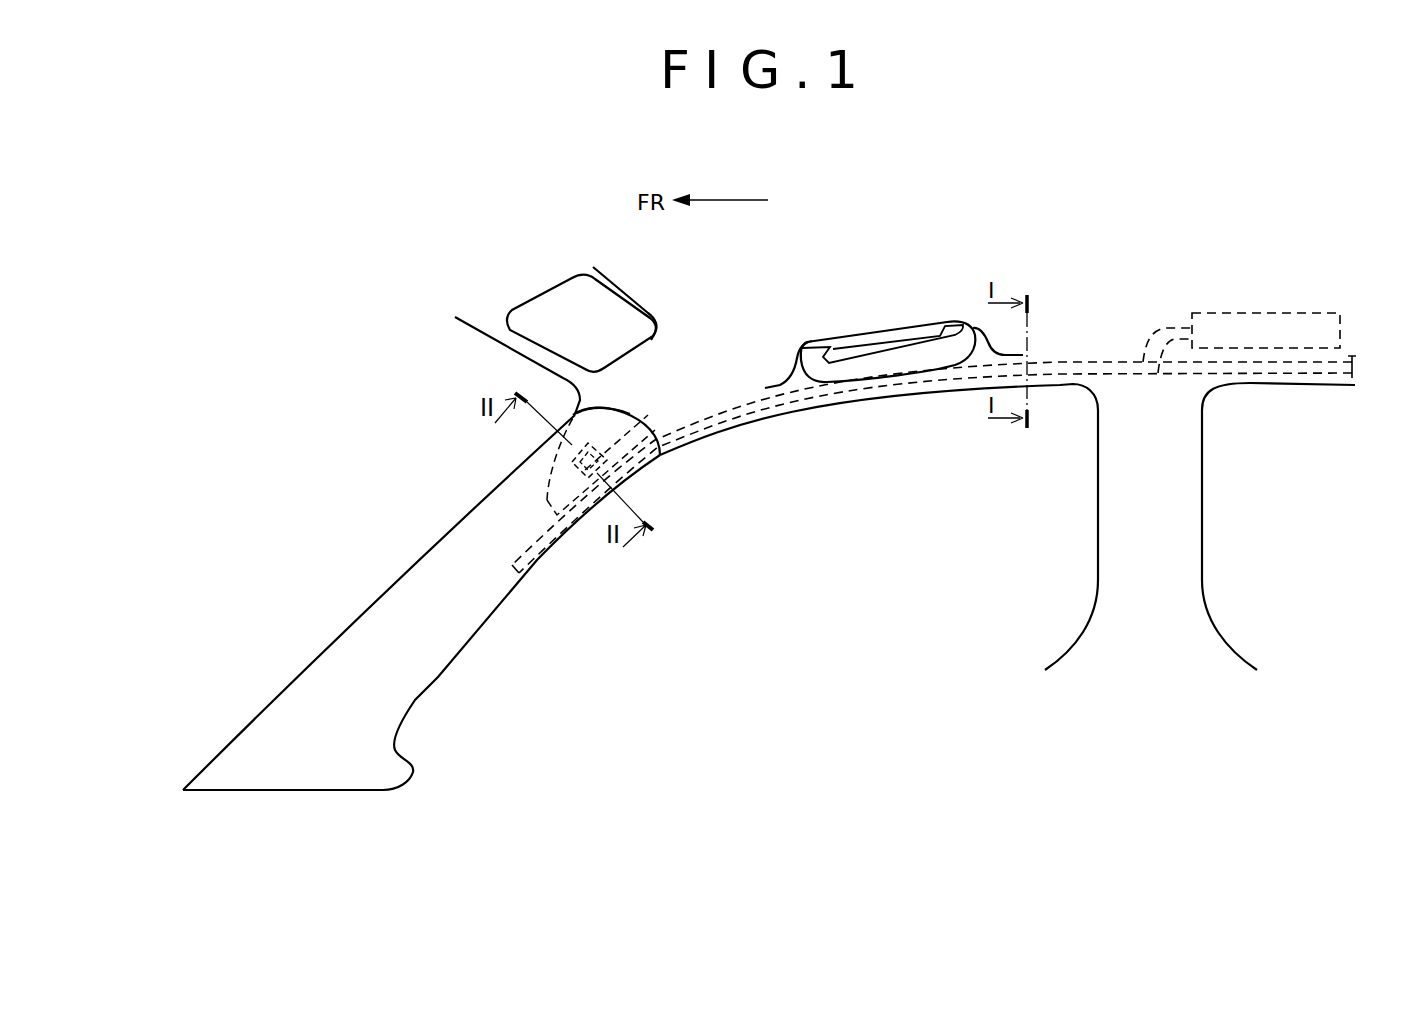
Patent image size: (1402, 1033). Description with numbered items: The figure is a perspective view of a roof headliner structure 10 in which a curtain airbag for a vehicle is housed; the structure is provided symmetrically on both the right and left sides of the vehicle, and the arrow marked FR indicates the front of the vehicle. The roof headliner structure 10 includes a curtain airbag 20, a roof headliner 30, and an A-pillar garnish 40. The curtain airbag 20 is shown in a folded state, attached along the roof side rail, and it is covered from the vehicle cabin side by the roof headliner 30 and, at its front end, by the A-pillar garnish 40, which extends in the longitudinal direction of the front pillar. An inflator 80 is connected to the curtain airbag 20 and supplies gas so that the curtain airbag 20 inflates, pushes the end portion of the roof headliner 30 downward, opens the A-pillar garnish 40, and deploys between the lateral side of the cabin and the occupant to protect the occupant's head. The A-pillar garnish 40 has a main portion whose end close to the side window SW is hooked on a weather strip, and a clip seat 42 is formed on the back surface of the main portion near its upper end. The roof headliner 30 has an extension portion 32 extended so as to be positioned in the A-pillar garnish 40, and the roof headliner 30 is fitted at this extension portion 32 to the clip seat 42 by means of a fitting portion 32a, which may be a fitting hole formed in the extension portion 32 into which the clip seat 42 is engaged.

The roof headliner structure 10 is at (1077, 358).
The curtain airbag 20 is at (1258, 375).
The roof headliner 30 is at (917, 277).
The extension portion 32 is at (547, 500).
The fitting portion 32a is at (676, 403).
The A-pillar garnish 40 is at (437, 678).
The clip seat 42 is at (572, 466).
The inflator 80 is at (1256, 326).
The side window SW is at (818, 553).